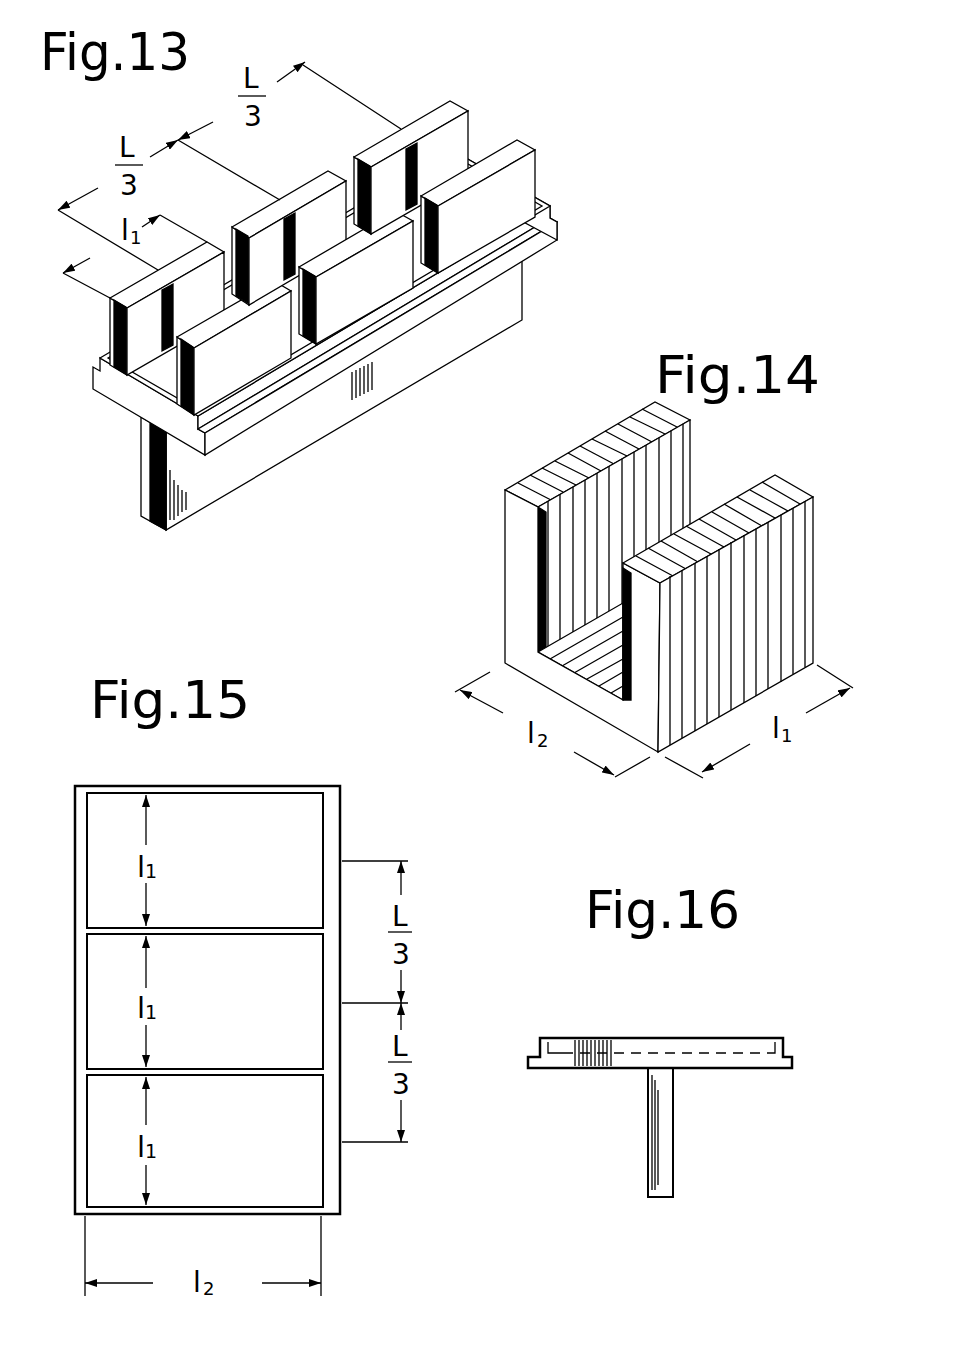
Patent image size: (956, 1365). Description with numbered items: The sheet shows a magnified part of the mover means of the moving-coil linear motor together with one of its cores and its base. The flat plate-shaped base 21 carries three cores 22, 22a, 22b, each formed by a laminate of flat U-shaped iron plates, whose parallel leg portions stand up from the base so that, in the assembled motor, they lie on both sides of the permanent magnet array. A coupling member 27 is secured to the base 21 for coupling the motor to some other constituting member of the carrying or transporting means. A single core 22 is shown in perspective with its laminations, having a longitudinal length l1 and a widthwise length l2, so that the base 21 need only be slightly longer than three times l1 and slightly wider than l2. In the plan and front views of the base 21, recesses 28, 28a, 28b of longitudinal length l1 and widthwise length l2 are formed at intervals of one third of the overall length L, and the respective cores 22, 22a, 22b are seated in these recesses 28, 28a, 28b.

In FIG. 13, the base 21 is at (240, 412).
In FIG. 15, the base 21 is at (336, 835).
In FIG. 16, the base 21 is at (790, 1061).
In FIG. 13, the core 22 is at (263, 353).
In FIG. 14, the core 22 is at (507, 577).
In FIG. 13, the core 22a is at (382, 282).
In FIG. 13, the core 22b is at (488, 222).
In FIG. 13, the coupling member 27 is at (380, 380).
In FIG. 16, the coupling member 27 is at (675, 1132).
In FIG. 15, the recess 28 is at (287, 1168).
In FIG. 16, the recess 28 is at (722, 1052).
In FIG. 15, the recess 28a is at (302, 1026).
In FIG. 15, the recess 28b is at (298, 880).